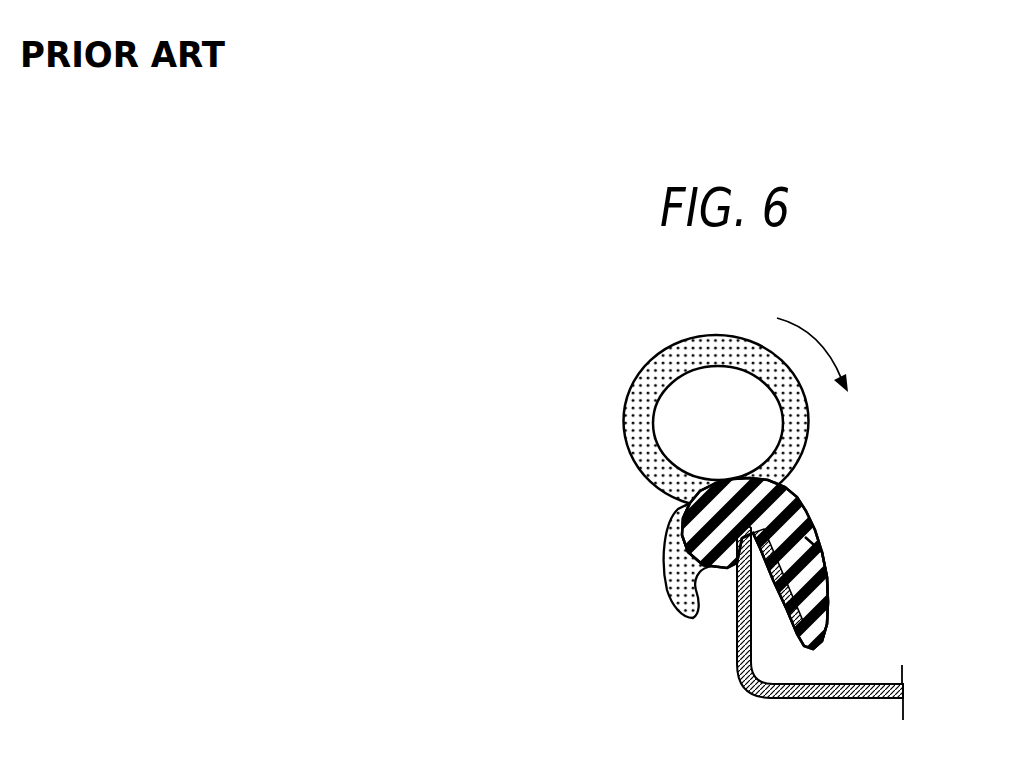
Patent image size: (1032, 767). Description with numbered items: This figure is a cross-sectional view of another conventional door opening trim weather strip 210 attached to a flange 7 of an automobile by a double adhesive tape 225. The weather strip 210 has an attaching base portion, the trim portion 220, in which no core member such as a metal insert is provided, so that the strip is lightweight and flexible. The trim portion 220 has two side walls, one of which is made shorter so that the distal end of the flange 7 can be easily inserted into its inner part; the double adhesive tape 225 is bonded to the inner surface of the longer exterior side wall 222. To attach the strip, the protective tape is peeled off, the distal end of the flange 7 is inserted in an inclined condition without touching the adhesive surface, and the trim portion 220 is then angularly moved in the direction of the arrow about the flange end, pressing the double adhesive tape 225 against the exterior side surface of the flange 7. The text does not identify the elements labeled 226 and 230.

The flange 7 is at (736, 648).
The weather strip 210 is at (606, 488).
The trim portion 220 is at (814, 531).
The exterior side wall 222 is at (810, 613).
The double adhesive tape 225 is at (798, 631).
The protrusion 226 is at (682, 506).
The roller 230 is at (618, 420).